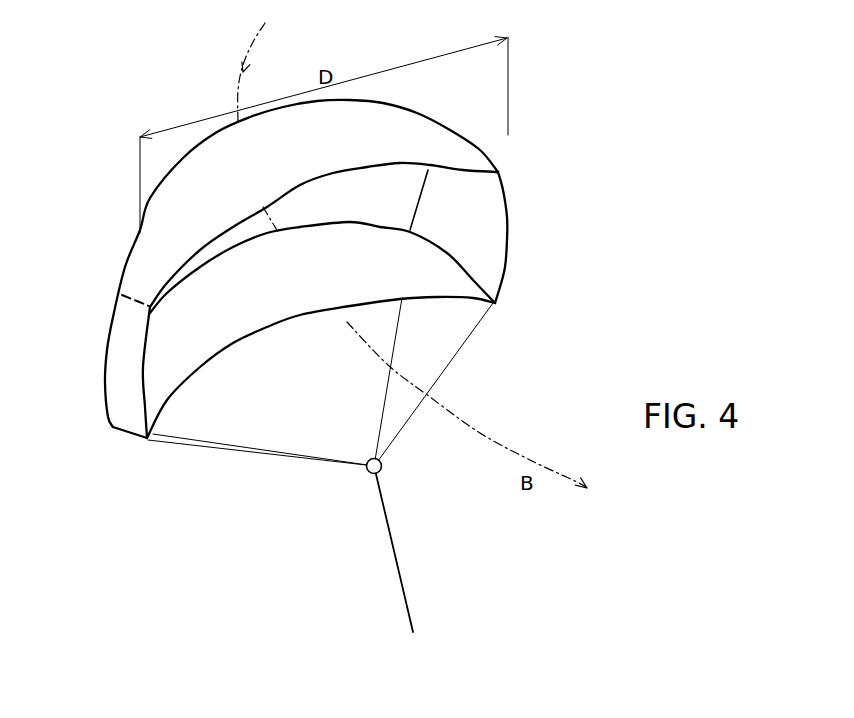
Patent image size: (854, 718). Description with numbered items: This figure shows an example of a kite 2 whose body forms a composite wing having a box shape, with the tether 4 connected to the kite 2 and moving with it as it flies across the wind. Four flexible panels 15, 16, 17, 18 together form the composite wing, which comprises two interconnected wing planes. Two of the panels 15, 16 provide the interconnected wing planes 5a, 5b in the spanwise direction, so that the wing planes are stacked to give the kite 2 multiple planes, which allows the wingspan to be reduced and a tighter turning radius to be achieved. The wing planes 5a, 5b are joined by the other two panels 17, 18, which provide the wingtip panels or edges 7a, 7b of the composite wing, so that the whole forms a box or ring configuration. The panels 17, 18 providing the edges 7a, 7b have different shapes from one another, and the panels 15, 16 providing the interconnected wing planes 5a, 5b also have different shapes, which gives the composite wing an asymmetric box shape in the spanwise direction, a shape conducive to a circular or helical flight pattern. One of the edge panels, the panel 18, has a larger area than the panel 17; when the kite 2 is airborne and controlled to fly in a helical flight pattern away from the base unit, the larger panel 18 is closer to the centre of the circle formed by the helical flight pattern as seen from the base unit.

The kite 2 is at (565, 112).
The tether 4 is at (390, 538).
The wing plane 5a is at (247, 177).
The wing plane 5b is at (372, 250).
The wingtip edge 7a is at (508, 205).
The wingtip edge 7b is at (120, 316).
The flexible panel 15 is at (230, 360).
The flexible panel 16 is at (140, 240).
The flexible panel 17 is at (123, 372).
The flexible panel 18 is at (508, 238).